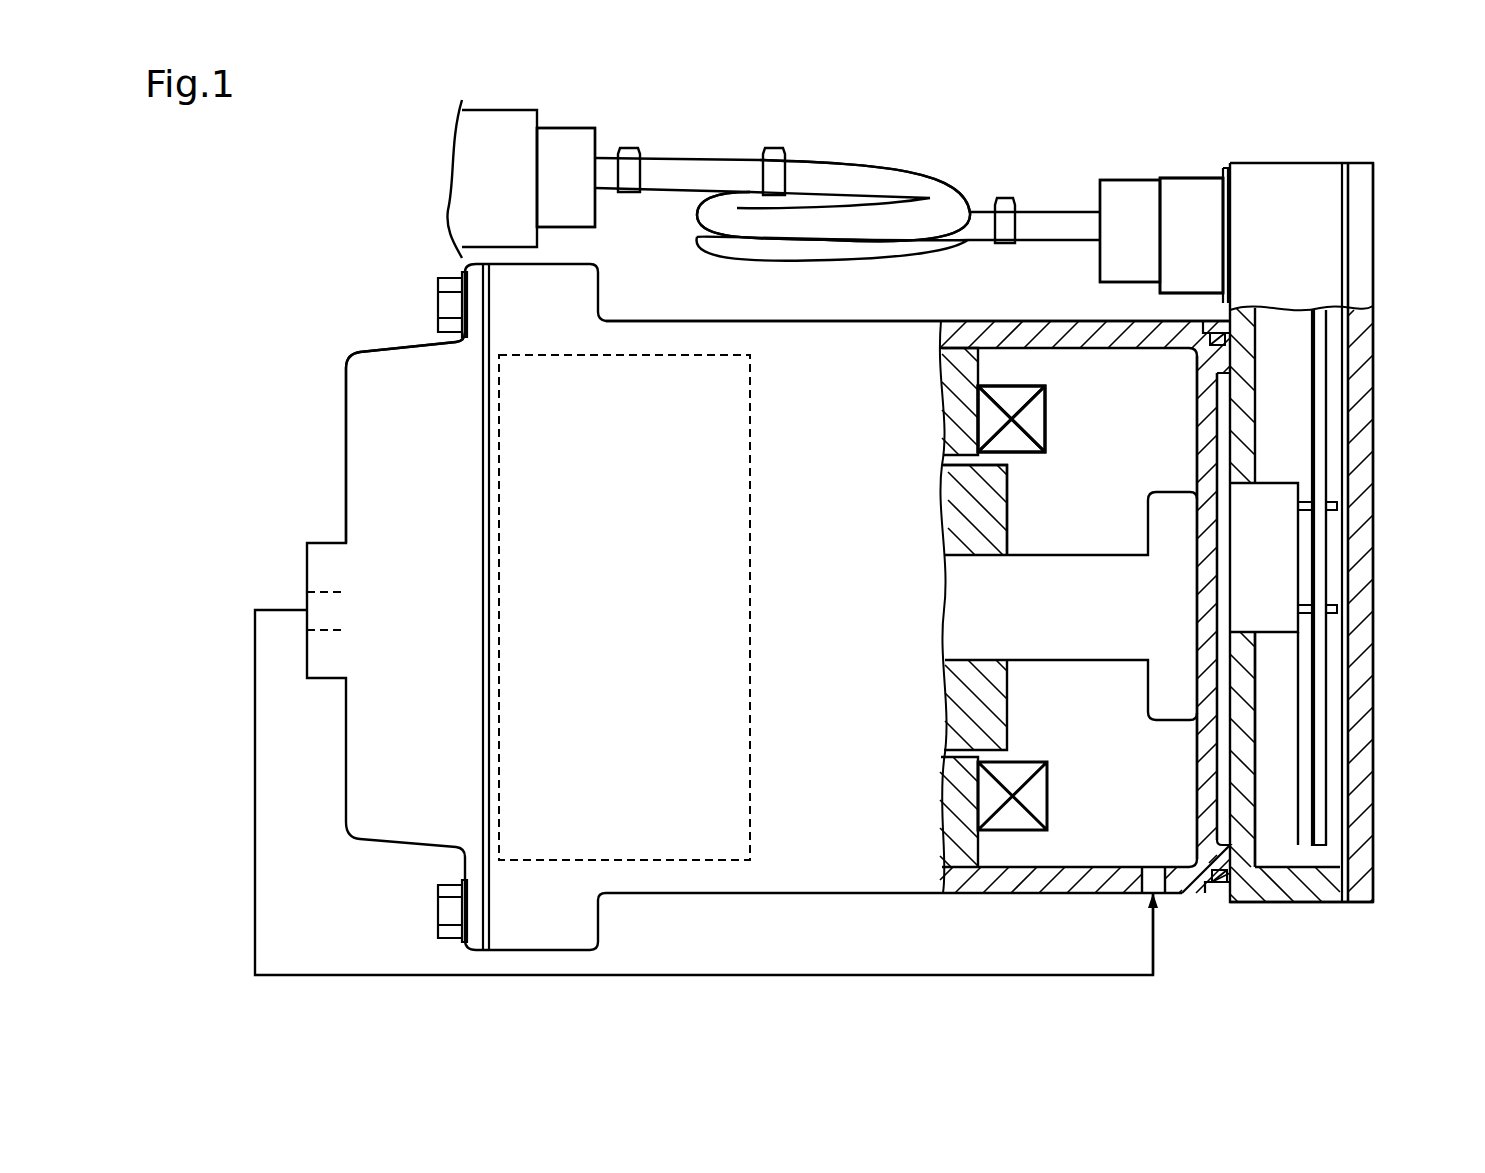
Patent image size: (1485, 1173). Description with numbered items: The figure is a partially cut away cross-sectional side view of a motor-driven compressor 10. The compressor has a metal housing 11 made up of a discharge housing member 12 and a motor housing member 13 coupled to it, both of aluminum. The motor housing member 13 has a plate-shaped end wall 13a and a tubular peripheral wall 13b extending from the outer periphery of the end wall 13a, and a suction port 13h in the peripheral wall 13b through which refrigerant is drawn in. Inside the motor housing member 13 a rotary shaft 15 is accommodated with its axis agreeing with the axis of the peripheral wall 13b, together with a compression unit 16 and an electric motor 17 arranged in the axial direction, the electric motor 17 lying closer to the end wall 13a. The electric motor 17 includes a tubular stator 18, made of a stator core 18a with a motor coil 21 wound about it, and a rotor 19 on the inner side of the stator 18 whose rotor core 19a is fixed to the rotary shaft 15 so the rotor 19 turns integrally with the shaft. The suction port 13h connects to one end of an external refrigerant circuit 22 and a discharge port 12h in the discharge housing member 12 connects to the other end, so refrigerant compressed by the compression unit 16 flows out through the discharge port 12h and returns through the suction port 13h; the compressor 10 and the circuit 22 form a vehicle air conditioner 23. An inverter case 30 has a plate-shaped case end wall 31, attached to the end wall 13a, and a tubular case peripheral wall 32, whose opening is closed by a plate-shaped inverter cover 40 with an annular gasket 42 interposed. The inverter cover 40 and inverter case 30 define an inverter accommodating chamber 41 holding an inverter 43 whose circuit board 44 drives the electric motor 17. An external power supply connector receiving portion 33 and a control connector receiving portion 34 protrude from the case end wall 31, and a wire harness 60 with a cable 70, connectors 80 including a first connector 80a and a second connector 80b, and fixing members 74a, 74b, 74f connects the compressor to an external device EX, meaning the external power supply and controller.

The motor-driven compressor 10 is at (358, 301).
The housing 11 is at (841, 320).
The discharge housing member 12 is at (346, 380).
The discharge port 12h is at (310, 598).
The motor housing member 13 is at (728, 319).
The end wall 13a is at (1200, 752).
The peripheral wall 13b is at (1074, 320).
The suction port 13h is at (1140, 894).
The rotary shaft 15 is at (1068, 659).
The compression unit 16 is at (660, 352).
The electric motor 17 is at (980, 333).
The stator 18 is at (1108, 390).
The stator core 18a is at (962, 408).
The rotor 19 is at (1008, 516).
The rotor core 19a is at (945, 535).
The motor coil 21 is at (1033, 425).
The external refrigerant circuit 22 is at (1155, 948).
The vehicle air conditioner 23 is at (1238, 953).
The inverter case 30 is at (1325, 188).
The case end wall 31 is at (1237, 786).
The case peripheral wall 32 is at (1289, 896).
The external power supply connector receiving portion 33 is at (1188, 174).
The control connector receiving portion 34 is at (1191, 235).
The inverter cover 40 is at (1360, 216).
The inverter accommodating chamber 41 is at (1288, 838).
The gasket 42 is at (1345, 902).
The inverter 43 is at (1339, 354).
The circuit board 44 is at (1320, 400).
The wire harness 60 is at (778, 107).
The cable 70 is at (893, 165).
The fixing member 74a is at (627, 193).
The fixing member 74b is at (772, 148).
The fixing member 74f is at (1003, 198).
The connector 80 is at (848, 205).
The first connector 80a is at (1128, 178).
The second connector 80b is at (558, 128).
The external device EX is at (497, 110).